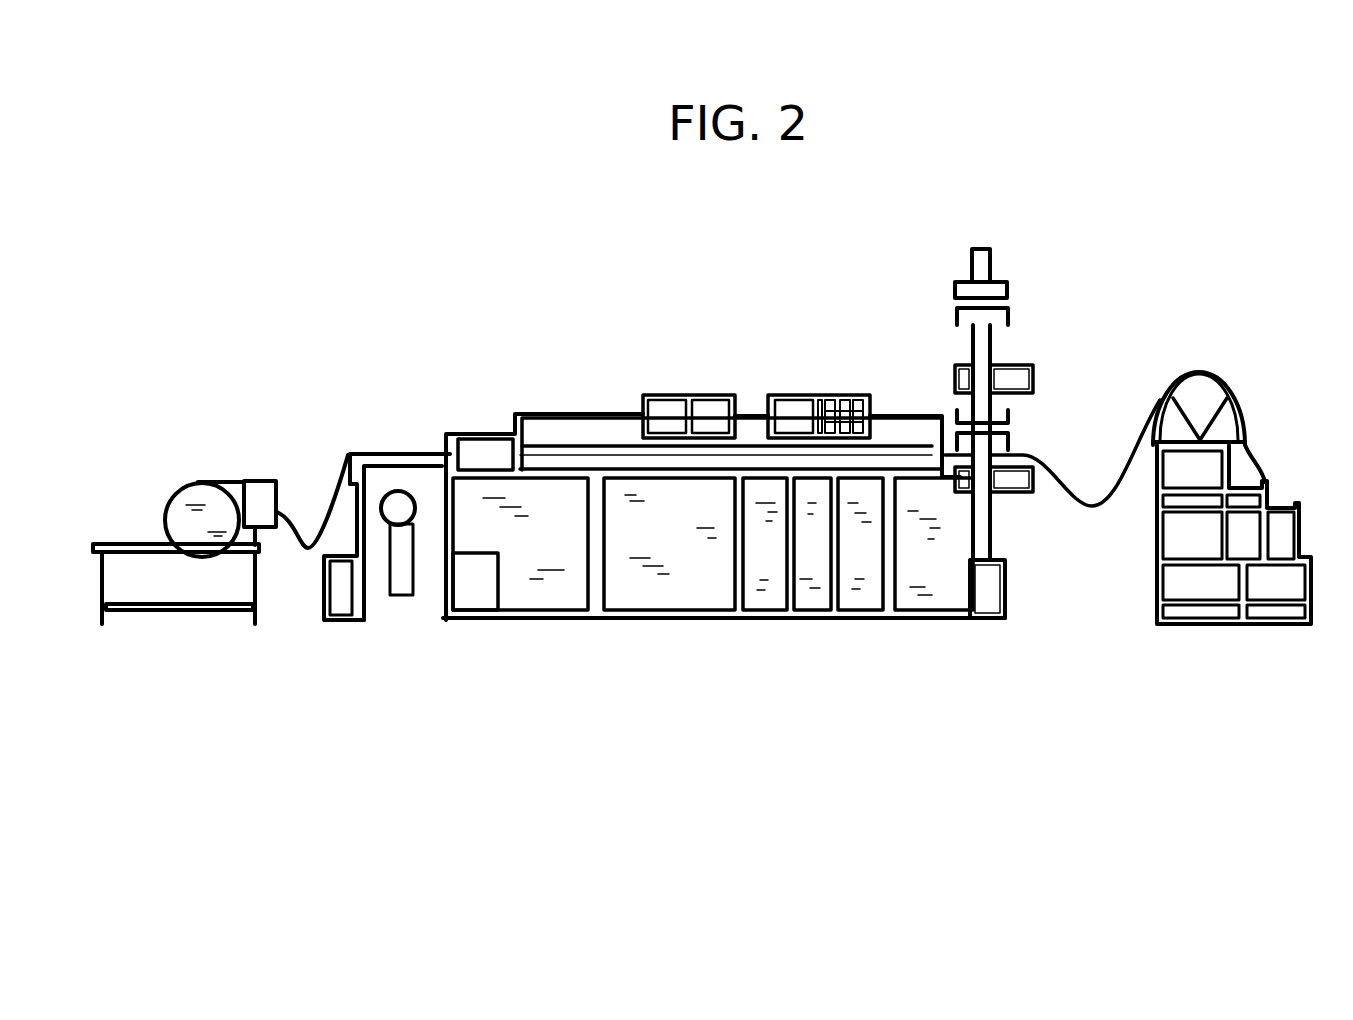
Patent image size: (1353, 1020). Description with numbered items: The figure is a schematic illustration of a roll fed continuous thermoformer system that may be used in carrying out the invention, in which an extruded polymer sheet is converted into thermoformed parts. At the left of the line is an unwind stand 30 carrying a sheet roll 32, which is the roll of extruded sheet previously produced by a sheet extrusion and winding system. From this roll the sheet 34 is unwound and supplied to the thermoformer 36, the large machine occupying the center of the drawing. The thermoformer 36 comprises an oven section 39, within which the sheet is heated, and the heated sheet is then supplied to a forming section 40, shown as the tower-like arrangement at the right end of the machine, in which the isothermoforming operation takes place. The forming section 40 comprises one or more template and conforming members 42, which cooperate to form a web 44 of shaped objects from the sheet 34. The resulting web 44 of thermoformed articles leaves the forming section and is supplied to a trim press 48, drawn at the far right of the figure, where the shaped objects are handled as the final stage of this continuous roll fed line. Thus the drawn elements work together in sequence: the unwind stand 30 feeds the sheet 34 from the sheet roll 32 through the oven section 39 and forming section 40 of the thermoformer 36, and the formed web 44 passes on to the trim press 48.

The unwind stand 30 is at (172, 612).
The sheet roll 32 is at (168, 507).
The sheet 34 is at (368, 453).
The thermoformer 36 is at (740, 620).
The oven section 39 is at (538, 412).
The forming section 40 is at (938, 277).
The template and conforming members 42 is at (1035, 368).
The web 44 is at (1090, 508).
The trim press 48 is at (1245, 625).